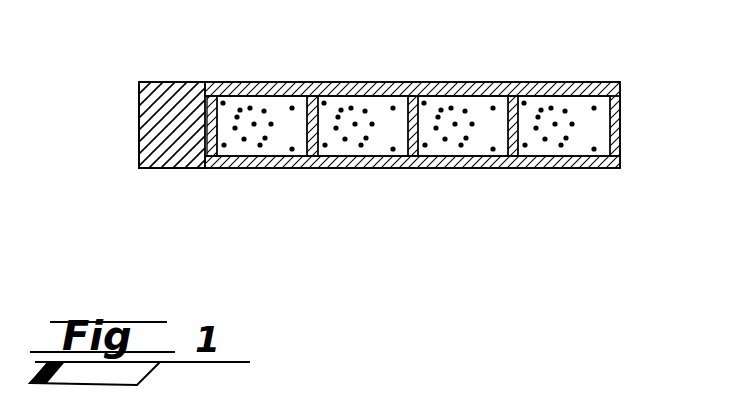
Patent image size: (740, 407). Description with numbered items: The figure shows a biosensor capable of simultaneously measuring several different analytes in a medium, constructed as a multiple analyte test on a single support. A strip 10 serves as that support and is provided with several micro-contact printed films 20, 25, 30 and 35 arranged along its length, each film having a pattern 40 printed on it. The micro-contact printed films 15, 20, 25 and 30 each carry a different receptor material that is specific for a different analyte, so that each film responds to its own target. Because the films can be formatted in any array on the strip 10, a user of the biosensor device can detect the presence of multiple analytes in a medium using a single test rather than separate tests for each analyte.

The strip 10 is at (515, 57).
The micro-contact printed film 15 is at (255, 88).
The micro-contact printed film 20 is at (240, 150).
The micro-contact printed film 25 is at (353, 152).
The micro-contact printed film 30 is at (474, 150).
The micro-contact printed film 35 is at (554, 152).
The pattern 40 is at (372, 112).